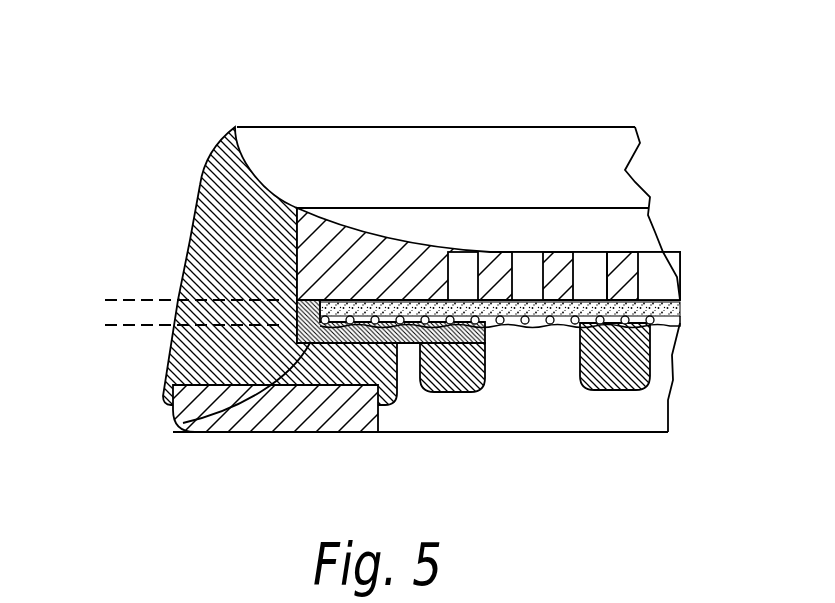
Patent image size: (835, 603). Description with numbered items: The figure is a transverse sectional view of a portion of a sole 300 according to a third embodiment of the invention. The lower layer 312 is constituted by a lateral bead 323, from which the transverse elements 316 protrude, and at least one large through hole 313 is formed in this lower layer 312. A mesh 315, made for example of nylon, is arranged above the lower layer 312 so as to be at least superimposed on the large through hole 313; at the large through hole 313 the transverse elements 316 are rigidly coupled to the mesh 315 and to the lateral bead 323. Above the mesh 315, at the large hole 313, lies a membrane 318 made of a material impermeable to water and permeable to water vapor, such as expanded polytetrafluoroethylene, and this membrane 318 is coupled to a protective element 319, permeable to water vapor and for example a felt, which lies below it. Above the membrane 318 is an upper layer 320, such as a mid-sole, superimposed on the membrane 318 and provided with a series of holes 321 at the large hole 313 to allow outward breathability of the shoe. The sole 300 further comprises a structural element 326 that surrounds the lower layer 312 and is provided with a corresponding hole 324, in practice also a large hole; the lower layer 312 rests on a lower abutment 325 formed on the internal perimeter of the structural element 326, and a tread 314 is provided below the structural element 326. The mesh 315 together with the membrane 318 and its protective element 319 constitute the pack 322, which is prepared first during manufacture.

The sole 300 is at (178, 136).
The lower layer 312 is at (703, 328).
The large through hole 313 is at (495, 380).
The tread 314 is at (216, 432).
The mesh 315 is at (682, 316).
The transverse elements 316 is at (488, 343).
The membrane 318 is at (640, 300).
The protective element 319 is at (655, 300).
The upper layer 320 is at (378, 232).
The holes 321 is at (586, 251).
The pack 322 is at (105, 325).
The lateral bead 323 is at (303, 432).
The hole 324 is at (599, 428).
The lower abutment 325 is at (183, 422).
The structural element 326 is at (187, 237).